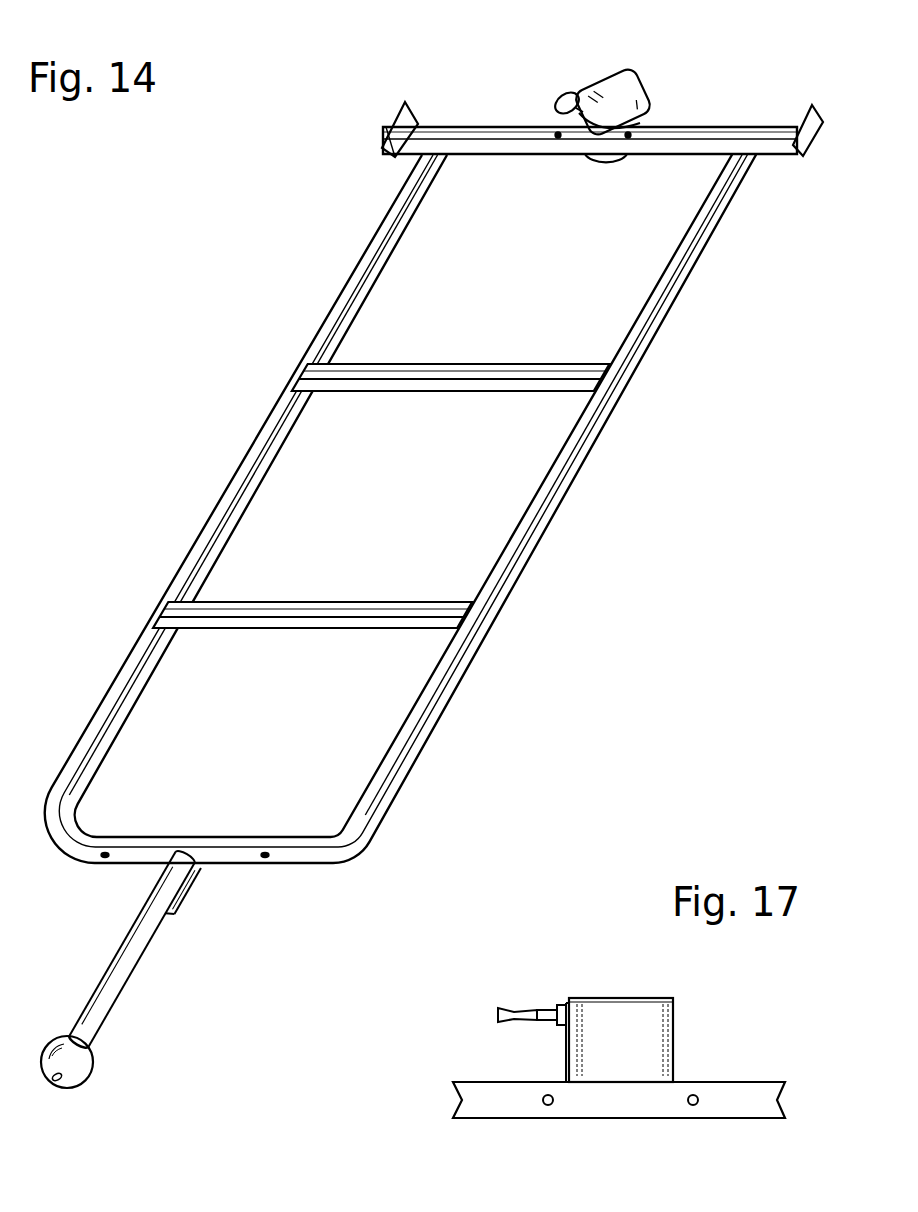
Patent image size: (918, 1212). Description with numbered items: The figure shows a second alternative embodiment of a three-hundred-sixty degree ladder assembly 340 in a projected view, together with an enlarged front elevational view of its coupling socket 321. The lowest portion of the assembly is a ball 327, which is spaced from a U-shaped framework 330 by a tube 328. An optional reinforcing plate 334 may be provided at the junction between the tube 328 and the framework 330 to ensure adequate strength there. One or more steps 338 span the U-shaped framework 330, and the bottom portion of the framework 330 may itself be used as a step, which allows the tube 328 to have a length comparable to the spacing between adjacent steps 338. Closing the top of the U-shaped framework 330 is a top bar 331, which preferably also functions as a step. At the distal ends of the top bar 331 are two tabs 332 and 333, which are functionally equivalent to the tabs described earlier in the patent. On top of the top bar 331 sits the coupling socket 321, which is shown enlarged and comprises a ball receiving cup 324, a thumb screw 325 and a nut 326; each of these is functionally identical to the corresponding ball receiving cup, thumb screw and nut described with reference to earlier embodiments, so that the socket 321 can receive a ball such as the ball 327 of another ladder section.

In FIG. 17, the coupling socket 321 is at (594, 1002).
In FIG. 17, the ball receiving cup 324 is at (629, 1010).
In FIG. 17, the thumb screw 325 is at (510, 1010).
In FIG. 17, the nut 326 is at (561, 1004).
In FIG. 14, the ball 327 is at (87, 1070).
In FIG. 14, the tube 328 is at (131, 953).
In FIG. 14, the U-shaped framework 330 is at (574, 478).
In FIG. 14, the top bar 331 is at (733, 134).
In FIG. 17, the top bar 331 is at (731, 1107).
In FIG. 14, the tab 332 is at (803, 167).
In FIG. 14, the tab 333 is at (403, 118).
In FIG. 14, the reinforcing plate 334 is at (200, 878).
In FIG. 14, the steps 338 is at (486, 372).
In FIG. 14, the 360 degree ladder assembly 340 is at (435, 455).